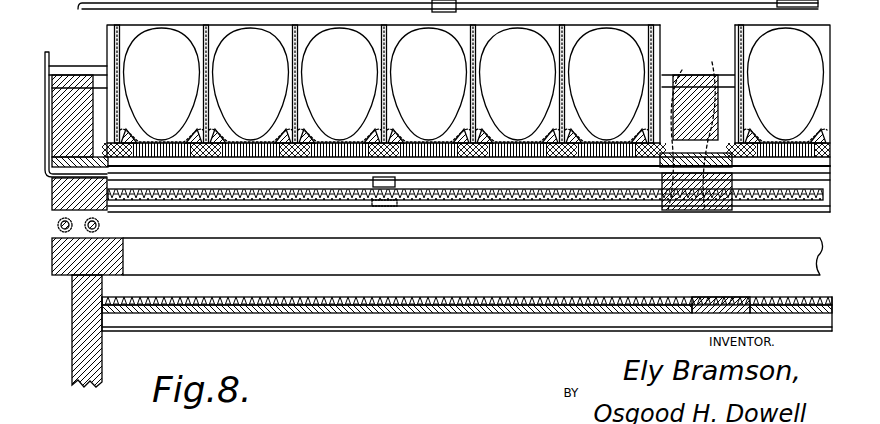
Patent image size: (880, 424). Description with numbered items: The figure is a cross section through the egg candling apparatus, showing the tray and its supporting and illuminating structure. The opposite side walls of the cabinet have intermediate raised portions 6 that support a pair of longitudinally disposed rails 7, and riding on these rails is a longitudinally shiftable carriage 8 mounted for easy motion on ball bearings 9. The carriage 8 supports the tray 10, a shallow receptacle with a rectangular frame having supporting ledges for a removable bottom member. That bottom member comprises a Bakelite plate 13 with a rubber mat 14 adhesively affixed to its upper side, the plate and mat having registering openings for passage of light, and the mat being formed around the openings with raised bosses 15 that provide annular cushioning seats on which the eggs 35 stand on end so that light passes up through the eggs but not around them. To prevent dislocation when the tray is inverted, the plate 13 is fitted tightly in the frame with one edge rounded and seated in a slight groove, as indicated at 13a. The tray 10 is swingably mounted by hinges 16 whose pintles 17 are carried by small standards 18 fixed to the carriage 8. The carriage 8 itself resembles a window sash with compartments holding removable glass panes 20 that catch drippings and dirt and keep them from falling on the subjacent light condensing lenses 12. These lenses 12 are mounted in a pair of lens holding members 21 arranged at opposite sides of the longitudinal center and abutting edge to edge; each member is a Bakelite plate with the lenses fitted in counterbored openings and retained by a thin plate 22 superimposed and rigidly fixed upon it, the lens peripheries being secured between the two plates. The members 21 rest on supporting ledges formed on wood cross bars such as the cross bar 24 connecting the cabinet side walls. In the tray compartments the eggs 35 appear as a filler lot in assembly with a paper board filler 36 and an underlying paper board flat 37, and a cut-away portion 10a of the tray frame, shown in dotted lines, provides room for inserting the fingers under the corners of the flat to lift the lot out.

The intermediate raised portions 6 is at (80, 354).
The rails 7 is at (123, 243).
The carriage 8 is at (104, 220).
The ball bearings 9 is at (66, 276).
The tray 10 is at (448, 6).
The cut-away portion 10a is at (697, 117).
The light condensing lenses 12 is at (595, 297).
The plate 13 is at (652, 140).
The rounded edge fitted in groove 13a is at (696, 202).
The rubber mat 14 is at (546, 143).
The raised bosses 15 is at (372, 133).
The hinges 16 is at (80, 68).
The pintles 17 is at (44, 52).
The standards 18 is at (50, 60).
The glass panes 20 is at (483, 143).
The lens holding members 21 is at (705, 313).
The thin plate 22 is at (662, 295).
The cross bar 24 is at (391, 317).
The eggs 35 is at (151, 55).
The paper board filler 36 is at (384, 45).
The paper board flat 37 is at (258, 140).